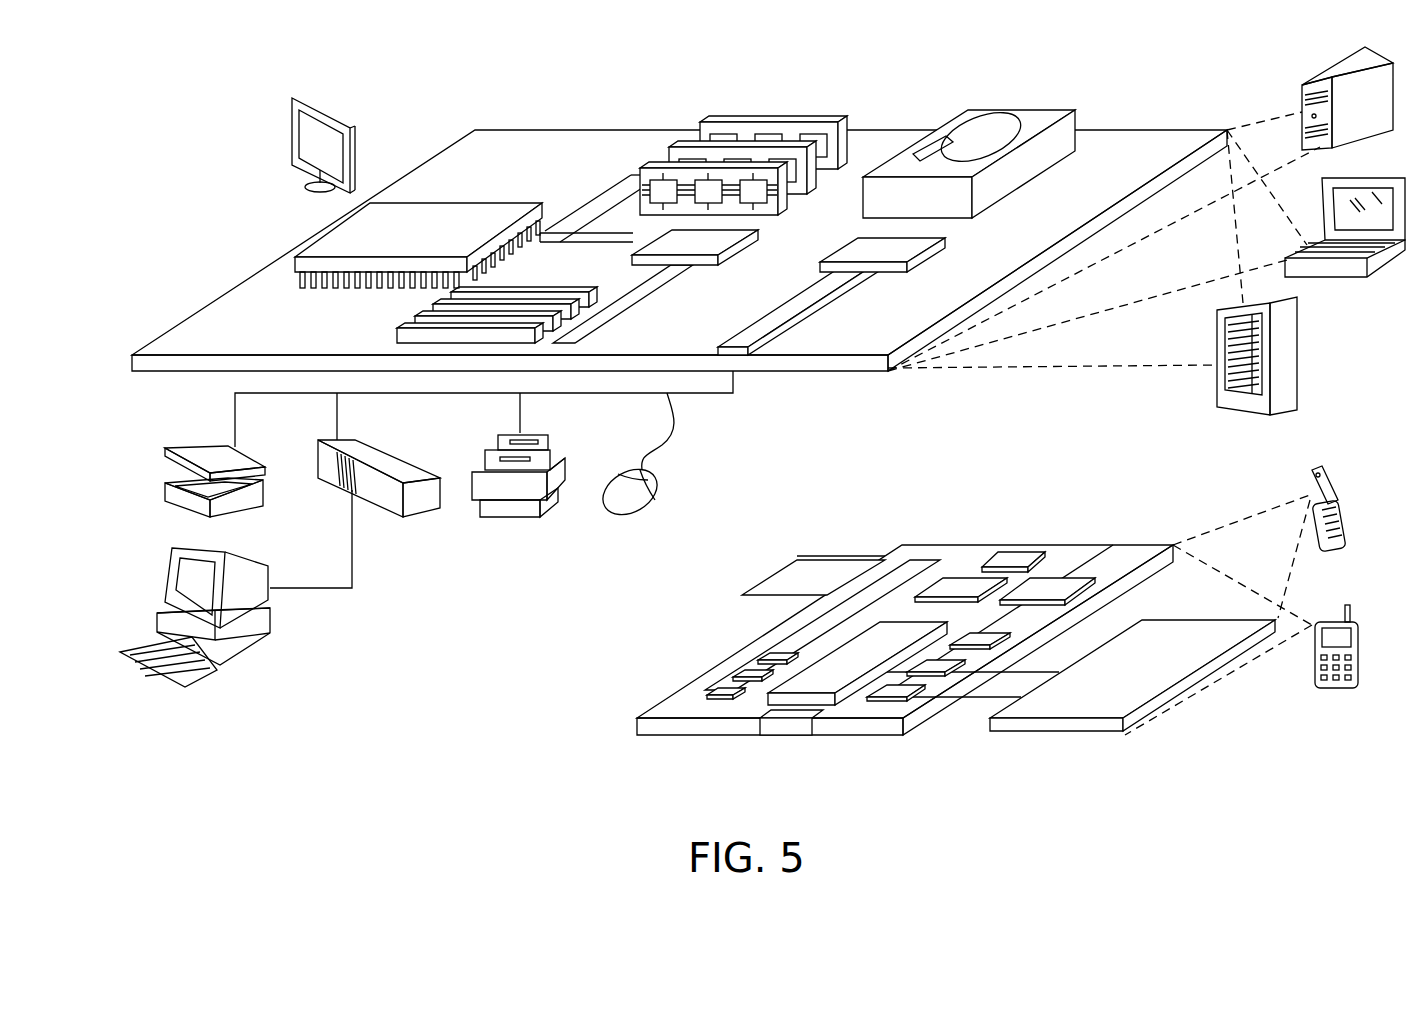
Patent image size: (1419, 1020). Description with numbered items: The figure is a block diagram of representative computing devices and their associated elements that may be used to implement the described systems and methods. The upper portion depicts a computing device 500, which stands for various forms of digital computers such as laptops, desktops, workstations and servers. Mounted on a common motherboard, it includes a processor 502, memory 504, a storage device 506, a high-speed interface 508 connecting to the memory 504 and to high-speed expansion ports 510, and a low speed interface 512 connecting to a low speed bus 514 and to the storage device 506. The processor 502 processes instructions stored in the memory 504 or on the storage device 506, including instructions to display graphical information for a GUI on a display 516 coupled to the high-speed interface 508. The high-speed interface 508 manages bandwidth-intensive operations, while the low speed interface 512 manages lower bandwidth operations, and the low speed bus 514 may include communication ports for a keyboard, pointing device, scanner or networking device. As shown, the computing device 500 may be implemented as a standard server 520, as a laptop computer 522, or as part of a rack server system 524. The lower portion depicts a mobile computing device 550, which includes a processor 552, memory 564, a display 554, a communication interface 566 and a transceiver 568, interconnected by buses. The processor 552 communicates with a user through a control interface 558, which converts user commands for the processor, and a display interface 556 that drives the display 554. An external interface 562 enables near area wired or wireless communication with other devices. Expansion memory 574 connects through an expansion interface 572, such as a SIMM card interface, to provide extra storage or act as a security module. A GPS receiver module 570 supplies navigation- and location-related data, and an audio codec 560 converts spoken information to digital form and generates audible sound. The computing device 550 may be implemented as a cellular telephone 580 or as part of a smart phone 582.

The computing device 500 is at (424, 74).
The processor 502 is at (326, 236).
The memory 504 is at (781, 124).
The storage device 506 is at (1013, 108).
The high-speed interface 508 is at (708, 250).
The high-speed expansion ports 510 is at (425, 312).
The low speed interface 512 is at (858, 248).
The low speed bus 514 is at (745, 340).
The display 516 is at (300, 98).
The standard server 520 is at (1323, 78).
The laptop computer 522 is at (1378, 178).
The rack server system 524 is at (1300, 355).
The computing device 550 is at (588, 744).
The processor 552 is at (826, 668).
The display 554 is at (1170, 636).
The display interface 556 is at (898, 692).
The control interface 558 is at (944, 668).
The audio codec 560 is at (984, 640).
The external interface 562 is at (791, 725).
The memory 564 is at (742, 674).
The communication interface 566 is at (962, 578).
The transceiver 568 is at (1056, 578).
The GPS receiver module 570 is at (1012, 553).
The expansion interface 572 is at (890, 560).
The expansion memory 574 is at (800, 560).
The cellular telephone 580 is at (1322, 470).
The smart phone 582 is at (1330, 620).